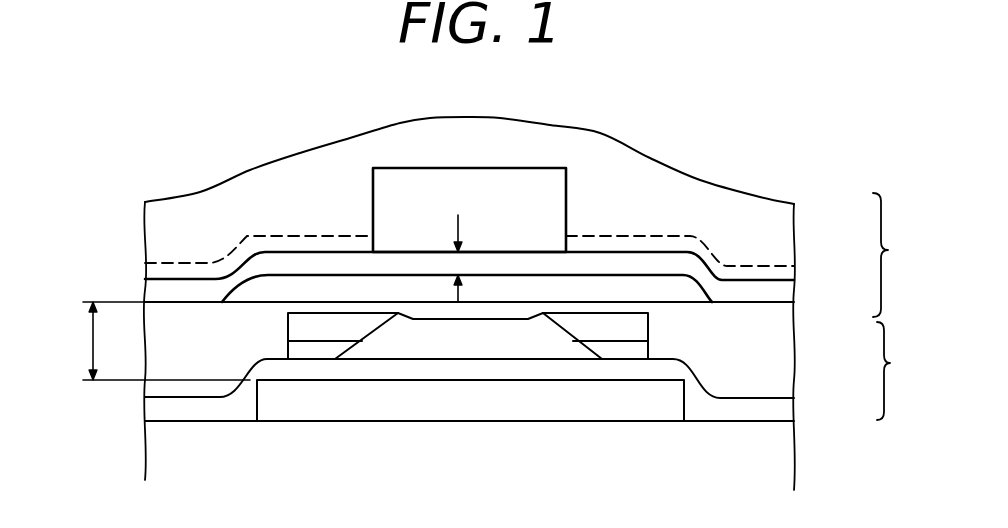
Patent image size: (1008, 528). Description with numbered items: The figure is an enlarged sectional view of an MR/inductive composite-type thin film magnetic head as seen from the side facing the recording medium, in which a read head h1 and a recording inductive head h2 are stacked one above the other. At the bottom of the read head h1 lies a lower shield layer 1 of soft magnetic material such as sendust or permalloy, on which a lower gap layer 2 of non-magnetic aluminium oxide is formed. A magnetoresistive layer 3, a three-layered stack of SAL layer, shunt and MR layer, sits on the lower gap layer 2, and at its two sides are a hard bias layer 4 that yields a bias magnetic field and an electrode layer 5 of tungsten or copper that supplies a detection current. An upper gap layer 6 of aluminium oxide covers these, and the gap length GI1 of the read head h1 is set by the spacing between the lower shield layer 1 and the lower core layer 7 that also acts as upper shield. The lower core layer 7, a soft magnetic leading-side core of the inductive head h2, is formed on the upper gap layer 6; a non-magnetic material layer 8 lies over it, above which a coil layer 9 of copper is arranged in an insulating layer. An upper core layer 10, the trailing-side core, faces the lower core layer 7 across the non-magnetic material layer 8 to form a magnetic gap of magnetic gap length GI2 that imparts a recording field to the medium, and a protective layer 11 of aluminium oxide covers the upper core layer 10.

The lower shield layer 1 is at (611, 403).
The lower gap layer 2 is at (781, 409).
The magnetoresistive layer 3 is at (481, 340).
The hard bias layer 4 is at (640, 352).
The electrode layer 5 is at (637, 331).
The upper gap layer 6 is at (787, 311).
The lower core layer 7 is at (690, 290).
The non-magnetic material layer 8 is at (178, 293).
The coil layer 9 is at (303, 235).
The upper core layer 10 is at (483, 172).
The protective layer 11 is at (378, 132).
The gap length GI1 is at (151, 341).
The magnetic gap length GI2 is at (458, 262).
The read head h1 is at (903, 371).
The inductive head h2 is at (901, 255).